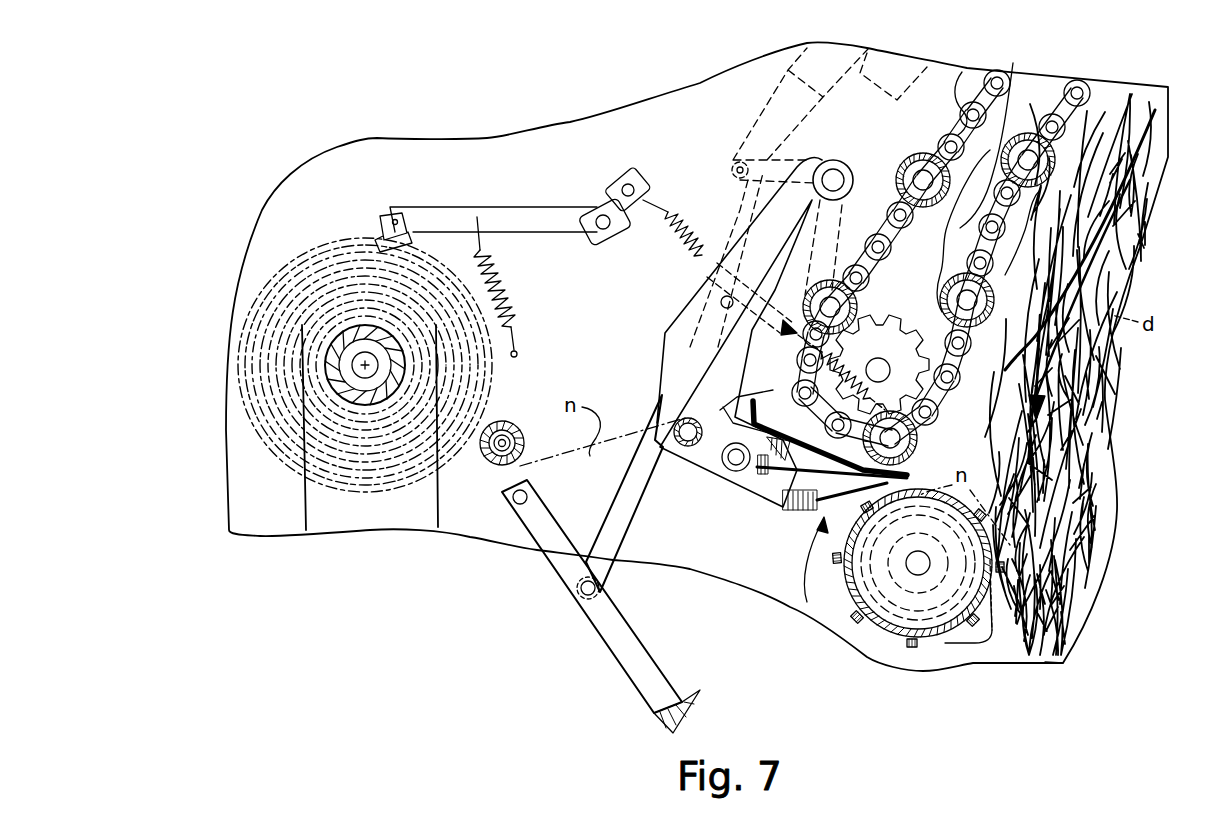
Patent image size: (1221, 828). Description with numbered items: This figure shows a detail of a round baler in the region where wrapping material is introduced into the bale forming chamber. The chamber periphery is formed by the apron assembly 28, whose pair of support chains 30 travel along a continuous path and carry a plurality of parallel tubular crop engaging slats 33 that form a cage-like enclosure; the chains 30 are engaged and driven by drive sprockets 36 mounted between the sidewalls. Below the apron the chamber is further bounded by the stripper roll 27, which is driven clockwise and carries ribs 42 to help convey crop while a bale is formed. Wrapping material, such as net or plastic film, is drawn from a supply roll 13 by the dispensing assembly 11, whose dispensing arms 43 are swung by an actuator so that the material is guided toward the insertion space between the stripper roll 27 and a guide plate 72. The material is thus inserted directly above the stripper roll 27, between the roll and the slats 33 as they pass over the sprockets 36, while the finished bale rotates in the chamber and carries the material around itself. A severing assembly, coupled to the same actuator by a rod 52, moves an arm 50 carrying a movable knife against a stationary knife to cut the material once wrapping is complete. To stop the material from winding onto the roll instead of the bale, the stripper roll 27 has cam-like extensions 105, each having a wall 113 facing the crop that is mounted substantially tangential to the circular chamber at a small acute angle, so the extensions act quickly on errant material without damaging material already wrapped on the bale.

The dispensing assembly 11 is at (698, 172).
The supply roll 13 is at (292, 266).
The stripper roll 27 is at (885, 650).
The apron assembly 28 is at (945, 112).
The support chains 30 is at (968, 75).
The crop engaging slats 33 is at (962, 222).
The drive sprockets 36 is at (884, 293).
The ribs 42 is at (837, 560).
The dispensing arms 43 is at (789, 246).
The arm 50 is at (630, 630).
The rod 52 is at (640, 518).
The guide plate 72 is at (800, 420).
The cam-like extensions 105 is at (990, 645).
The wall 113 is at (1000, 610).